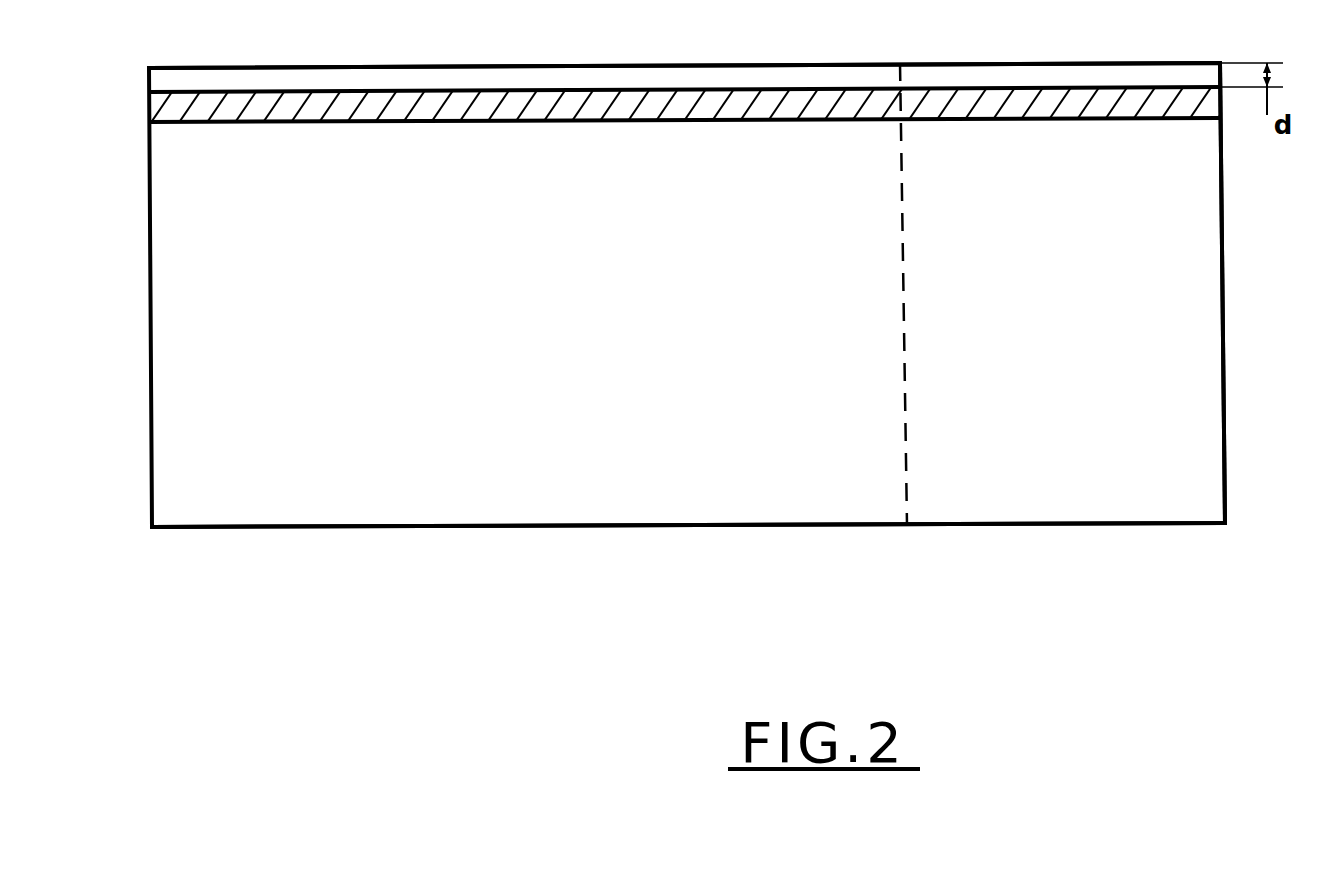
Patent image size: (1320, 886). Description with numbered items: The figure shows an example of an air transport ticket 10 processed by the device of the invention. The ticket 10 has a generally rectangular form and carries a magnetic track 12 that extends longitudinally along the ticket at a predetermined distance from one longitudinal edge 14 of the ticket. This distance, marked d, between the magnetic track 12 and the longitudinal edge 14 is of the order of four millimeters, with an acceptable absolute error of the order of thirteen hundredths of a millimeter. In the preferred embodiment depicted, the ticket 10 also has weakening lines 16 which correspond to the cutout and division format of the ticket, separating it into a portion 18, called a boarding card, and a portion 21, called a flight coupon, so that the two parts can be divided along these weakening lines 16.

The air transport ticket 10 is at (905, 535).
The magnetic track 12 is at (148, 110).
The longitudinal edge 14 is at (695, 66).
The weakening lines 16 is at (906, 418).
The boarding card portion 18 is at (1195, 338).
The flight coupon portion 21 is at (423, 510).